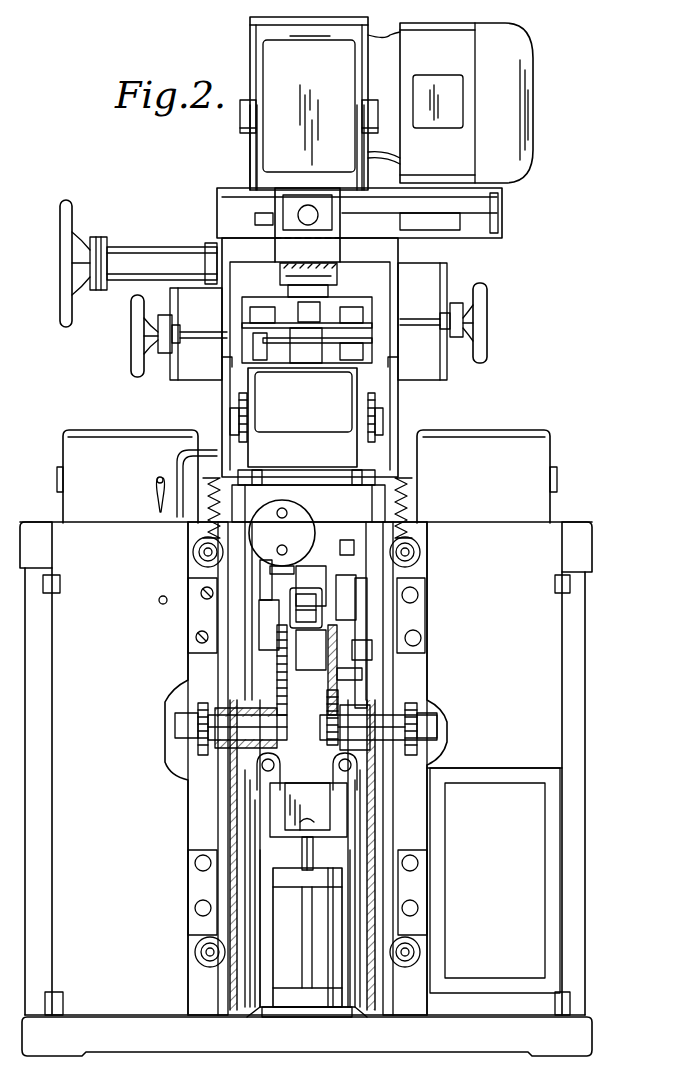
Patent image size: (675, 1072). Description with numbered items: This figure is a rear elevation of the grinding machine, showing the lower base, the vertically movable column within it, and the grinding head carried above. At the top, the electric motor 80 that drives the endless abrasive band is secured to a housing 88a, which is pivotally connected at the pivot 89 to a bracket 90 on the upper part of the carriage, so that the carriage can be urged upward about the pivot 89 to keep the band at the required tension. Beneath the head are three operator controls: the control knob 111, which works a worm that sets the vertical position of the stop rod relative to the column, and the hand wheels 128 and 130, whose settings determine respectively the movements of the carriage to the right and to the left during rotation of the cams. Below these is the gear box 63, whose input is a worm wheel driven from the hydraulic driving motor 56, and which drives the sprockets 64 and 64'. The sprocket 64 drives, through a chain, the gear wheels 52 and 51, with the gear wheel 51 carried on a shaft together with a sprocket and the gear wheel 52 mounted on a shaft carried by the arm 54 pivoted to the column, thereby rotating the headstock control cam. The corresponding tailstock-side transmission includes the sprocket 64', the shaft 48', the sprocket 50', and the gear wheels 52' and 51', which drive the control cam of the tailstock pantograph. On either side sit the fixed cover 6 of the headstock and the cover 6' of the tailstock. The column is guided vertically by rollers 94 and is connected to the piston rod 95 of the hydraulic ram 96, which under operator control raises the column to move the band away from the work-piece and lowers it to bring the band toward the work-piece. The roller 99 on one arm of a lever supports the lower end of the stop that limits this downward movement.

The housing 88a is at (262, 33).
The electric motor 80 is at (525, 75).
The pivot 89 is at (240, 116).
The bracket 90 is at (252, 150).
The control knob 111 is at (62, 249).
The hand wheel 128 is at (131, 338).
The hand wheel 130 is at (488, 330).
The sprocket 64' is at (210, 417).
The sprocket 64 is at (403, 417).
The gear box 63 is at (302, 417).
The cover 6' is at (137, 476).
The fixed cover 6 is at (487, 476).
The rollers 94 is at (193, 550).
The hydraulic driving motor 56 is at (282, 537).
The roller 99 is at (290, 603).
The gear wheel 52' is at (216, 670).
The arm 54 is at (362, 674).
The sprocket 50' is at (278, 724).
The gear wheel 52 is at (314, 717).
The shaft 48' is at (233, 750).
The gear wheel 51' is at (288, 771).
The gear wheel 51 is at (343, 795).
The piston rod 95 is at (314, 855).
The hydraulic ram 96 is at (290, 962).